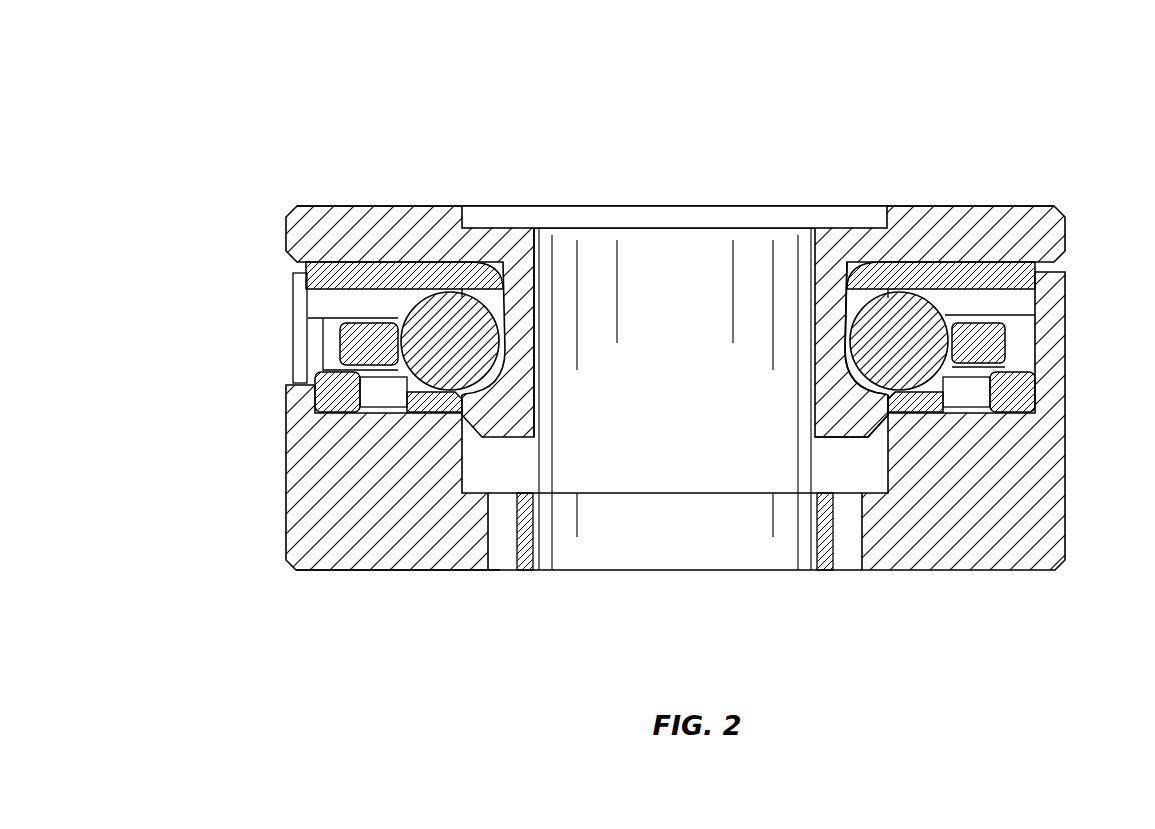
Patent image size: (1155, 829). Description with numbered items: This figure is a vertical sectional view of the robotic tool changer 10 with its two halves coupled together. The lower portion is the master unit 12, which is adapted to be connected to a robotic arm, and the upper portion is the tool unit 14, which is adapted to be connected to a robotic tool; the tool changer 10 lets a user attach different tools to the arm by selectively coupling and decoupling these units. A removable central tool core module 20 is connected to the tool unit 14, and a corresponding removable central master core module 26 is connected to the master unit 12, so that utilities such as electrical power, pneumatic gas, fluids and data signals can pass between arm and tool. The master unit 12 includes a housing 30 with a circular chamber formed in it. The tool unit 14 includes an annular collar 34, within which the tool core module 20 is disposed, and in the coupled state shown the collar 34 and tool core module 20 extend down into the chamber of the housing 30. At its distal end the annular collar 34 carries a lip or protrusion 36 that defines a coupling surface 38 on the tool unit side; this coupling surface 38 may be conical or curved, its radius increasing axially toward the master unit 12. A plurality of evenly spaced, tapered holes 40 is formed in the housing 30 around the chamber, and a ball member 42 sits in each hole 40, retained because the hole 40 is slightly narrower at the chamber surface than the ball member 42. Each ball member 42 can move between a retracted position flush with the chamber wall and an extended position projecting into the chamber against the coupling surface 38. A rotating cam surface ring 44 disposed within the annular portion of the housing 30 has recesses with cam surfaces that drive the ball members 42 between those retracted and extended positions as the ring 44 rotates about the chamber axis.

The robotic tool changer 10 is at (377, 132).
The master unit 12 is at (260, 447).
The tool unit 14 is at (258, 231).
The tool core module 20 is at (712, 217).
The master core module 26 is at (696, 555).
The housing 30 is at (382, 572).
The annular collar 34 is at (541, 360).
The protrusion 36 is at (855, 437).
The coupling surface 38 is at (883, 416).
The holes 40 is at (860, 297).
The ball member 42 is at (438, 352).
The rotating cam surface ring 44 is at (357, 350).